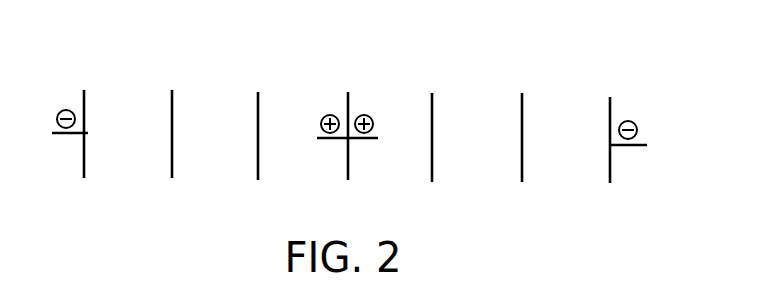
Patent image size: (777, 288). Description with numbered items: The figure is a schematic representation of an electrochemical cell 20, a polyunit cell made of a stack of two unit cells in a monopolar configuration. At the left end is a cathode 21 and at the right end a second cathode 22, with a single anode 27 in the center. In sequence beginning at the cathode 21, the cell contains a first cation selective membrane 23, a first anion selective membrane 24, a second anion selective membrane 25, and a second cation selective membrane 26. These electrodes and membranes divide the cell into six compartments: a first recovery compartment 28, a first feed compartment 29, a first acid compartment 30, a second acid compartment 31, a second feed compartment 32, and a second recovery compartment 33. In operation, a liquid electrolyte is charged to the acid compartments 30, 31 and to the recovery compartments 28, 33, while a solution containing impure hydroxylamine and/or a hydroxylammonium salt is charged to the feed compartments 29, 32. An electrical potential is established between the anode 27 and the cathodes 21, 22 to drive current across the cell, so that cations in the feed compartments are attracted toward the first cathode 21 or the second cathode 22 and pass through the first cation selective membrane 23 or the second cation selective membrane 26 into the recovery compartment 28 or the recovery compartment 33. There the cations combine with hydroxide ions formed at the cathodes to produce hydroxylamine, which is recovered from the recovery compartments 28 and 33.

The electrochemical cell 20 is at (349, 120).
The cathode 21 is at (71, 122).
The second cathode 22 is at (621, 126).
The first cation selective membrane 23 is at (172, 139).
The first anion selective membrane 24 is at (258, 141).
The second anion selective membrane 25 is at (432, 144).
The second cation selective membrane 26 is at (521, 144).
The anode 27 is at (347, 123).
The first recovery compartment 28 is at (125, 170).
The first feed compartment 29 is at (215, 170).
The first acid compartment 30 is at (303, 173).
The second acid compartment 31 is at (387, 173).
The second feed compartment 32 is at (477, 175).
The second recovery compartment 33 is at (564, 175).